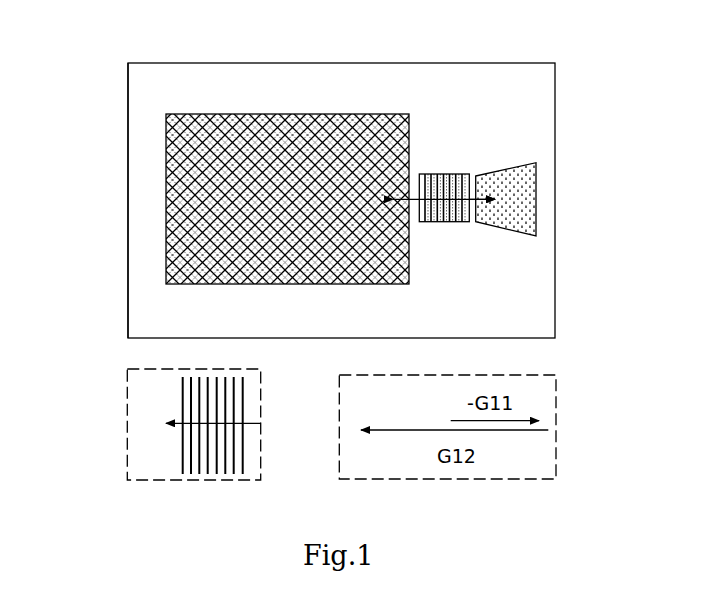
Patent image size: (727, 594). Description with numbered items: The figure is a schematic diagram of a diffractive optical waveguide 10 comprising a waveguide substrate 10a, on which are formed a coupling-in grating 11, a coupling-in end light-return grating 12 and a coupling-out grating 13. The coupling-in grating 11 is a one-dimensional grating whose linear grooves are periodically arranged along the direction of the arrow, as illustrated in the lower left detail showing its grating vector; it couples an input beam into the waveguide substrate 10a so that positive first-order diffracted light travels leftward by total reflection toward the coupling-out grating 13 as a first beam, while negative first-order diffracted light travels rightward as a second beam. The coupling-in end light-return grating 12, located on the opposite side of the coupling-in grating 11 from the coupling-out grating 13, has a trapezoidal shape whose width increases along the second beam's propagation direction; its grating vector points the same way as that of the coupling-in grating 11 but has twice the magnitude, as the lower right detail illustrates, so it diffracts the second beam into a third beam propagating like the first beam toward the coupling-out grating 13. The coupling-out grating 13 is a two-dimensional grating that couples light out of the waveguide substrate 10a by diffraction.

The diffractive optical waveguide 10 is at (322, 48).
The waveguide substrate 10a is at (128, 187).
The coupling-in grating 11 is at (445, 175).
The coupling-in end light-return grating 12 is at (537, 188).
The coupling-out grating 13 is at (413, 272).